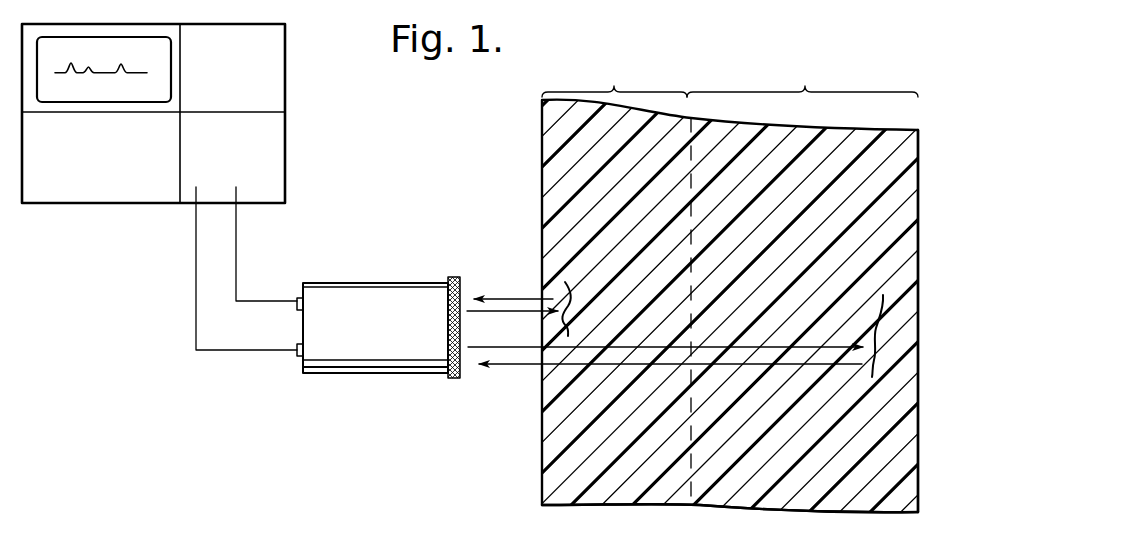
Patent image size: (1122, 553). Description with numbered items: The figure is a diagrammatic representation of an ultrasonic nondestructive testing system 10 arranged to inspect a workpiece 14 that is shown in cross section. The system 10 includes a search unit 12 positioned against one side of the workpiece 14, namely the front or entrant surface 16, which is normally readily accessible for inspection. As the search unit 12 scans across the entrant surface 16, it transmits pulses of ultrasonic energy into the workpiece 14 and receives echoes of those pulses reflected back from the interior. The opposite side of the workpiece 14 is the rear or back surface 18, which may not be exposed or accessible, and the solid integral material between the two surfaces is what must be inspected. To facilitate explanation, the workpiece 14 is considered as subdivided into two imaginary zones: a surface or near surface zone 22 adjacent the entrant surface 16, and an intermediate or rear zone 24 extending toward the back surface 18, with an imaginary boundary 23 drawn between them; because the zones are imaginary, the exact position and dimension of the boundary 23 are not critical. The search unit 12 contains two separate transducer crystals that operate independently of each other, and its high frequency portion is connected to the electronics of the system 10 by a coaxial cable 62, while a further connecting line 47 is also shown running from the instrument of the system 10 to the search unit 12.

The ultrasonic nondestructive testing system 10 is at (300, 132).
The search unit 12 is at (360, 292).
The workpiece 14 is at (634, 507).
The front or entrant surface 16 is at (542, 192).
The rear or back surface 18 is at (907, 235).
The surface or near surface zone 22 is at (614, 80).
The boundary 23 is at (692, 170).
The intermediate or rear zone 24 is at (802, 81).
The receiver cable 47 is at (196, 298).
The coaxial cable 62 is at (237, 277).